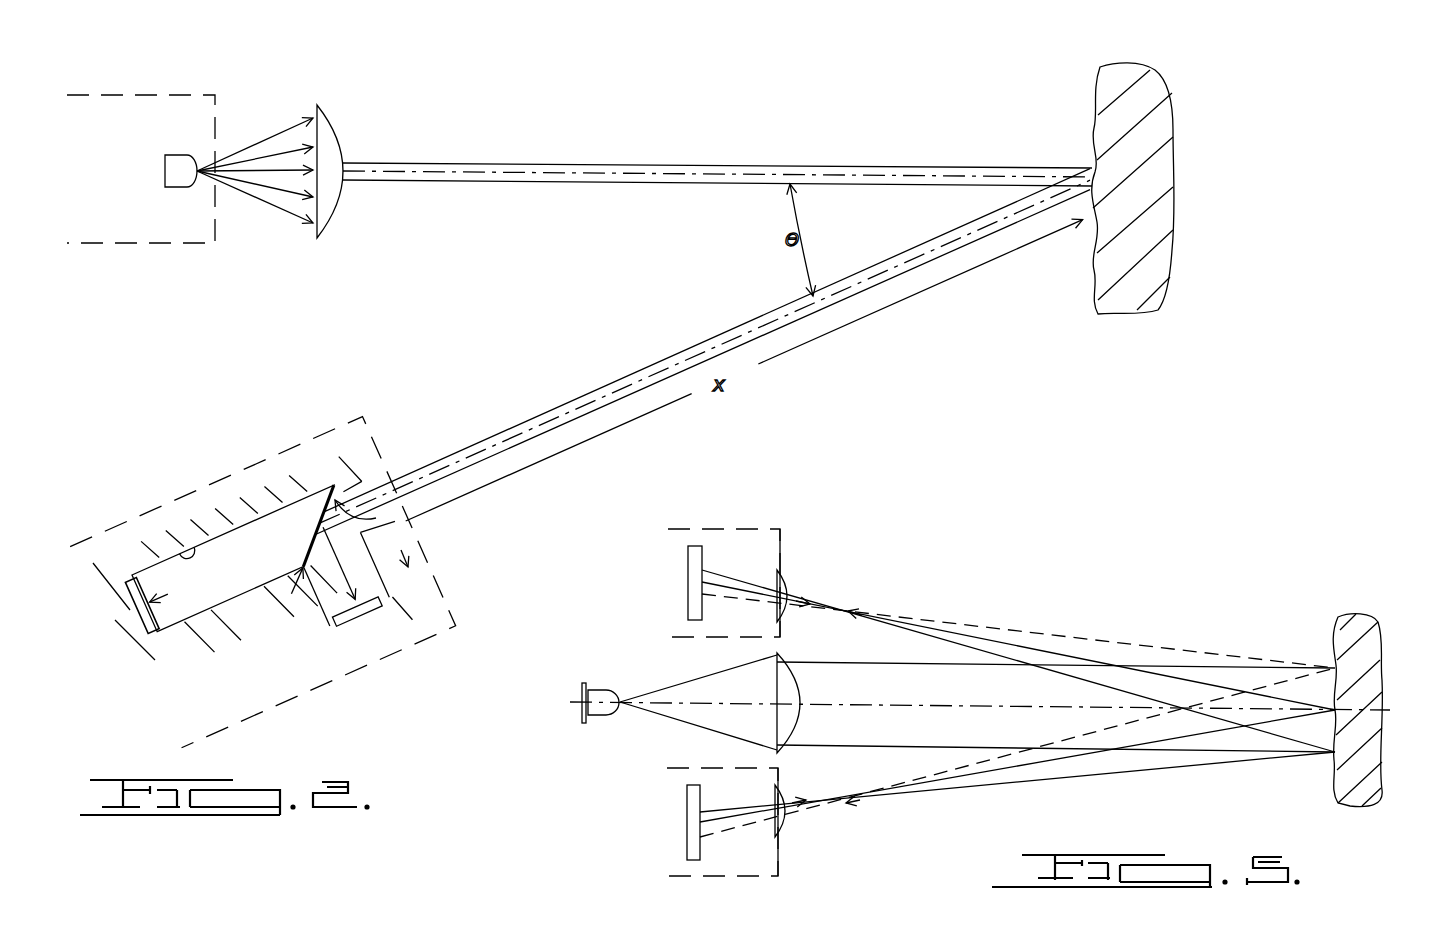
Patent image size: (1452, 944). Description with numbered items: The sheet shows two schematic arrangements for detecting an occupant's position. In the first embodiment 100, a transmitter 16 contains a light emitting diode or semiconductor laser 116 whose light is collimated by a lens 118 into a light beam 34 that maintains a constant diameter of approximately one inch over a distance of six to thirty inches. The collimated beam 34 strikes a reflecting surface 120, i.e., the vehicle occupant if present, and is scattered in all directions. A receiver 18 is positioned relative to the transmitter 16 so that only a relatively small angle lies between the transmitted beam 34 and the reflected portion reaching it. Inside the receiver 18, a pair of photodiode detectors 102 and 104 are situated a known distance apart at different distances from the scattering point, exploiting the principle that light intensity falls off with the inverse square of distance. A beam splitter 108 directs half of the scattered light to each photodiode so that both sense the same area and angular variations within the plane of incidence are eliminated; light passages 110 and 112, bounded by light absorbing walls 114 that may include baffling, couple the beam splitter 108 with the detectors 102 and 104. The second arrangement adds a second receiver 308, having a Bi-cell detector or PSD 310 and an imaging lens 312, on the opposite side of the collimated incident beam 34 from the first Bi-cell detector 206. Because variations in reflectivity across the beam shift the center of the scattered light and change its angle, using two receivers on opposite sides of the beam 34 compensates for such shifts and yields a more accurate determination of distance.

In FIG. 2, the first embodiment 100 is at (1230, 150).
In FIG. 2, the transmitter 16 is at (224, 104).
In FIG. 2, the light emitting diode or semiconductor laser 116 is at (162, 171).
In FIG. 5, the light emitting diode or semiconductor laser 116 is at (606, 683).
In FIG. 2, the lens 118 is at (348, 121).
In FIG. 2, the light beam 34 is at (688, 162).
In FIG. 5, the light beam 34 is at (948, 747).
In FIG. 2, the reflecting surface 120 is at (1097, 108).
In FIG. 5, the reflecting surface 120 is at (1333, 645).
In FIG. 2, the receiver 18 is at (374, 431).
In FIG. 5, the receiver 18 is at (789, 549).
In FIG. 2, the light passage 112 is at (262, 608).
In FIG. 2, the light passage 110 is at (252, 540).
In FIG. 2, the beam splitter 108 is at (322, 506).
In FIG. 2, the light absorbing walls 114 is at (178, 552).
In FIG. 2, the photodiode detector 104 is at (128, 574).
In FIG. 2, the photodiode detector 102 is at (350, 636).
In FIG. 5, the first Bi-cell detector 206 is at (684, 592).
In FIG. 5, the second receiver 308 is at (783, 868).
In FIG. 5, the Bi-cell detector or PSD 310 is at (682, 810).
In FIG. 5, the imaging lens 312 is at (793, 830).